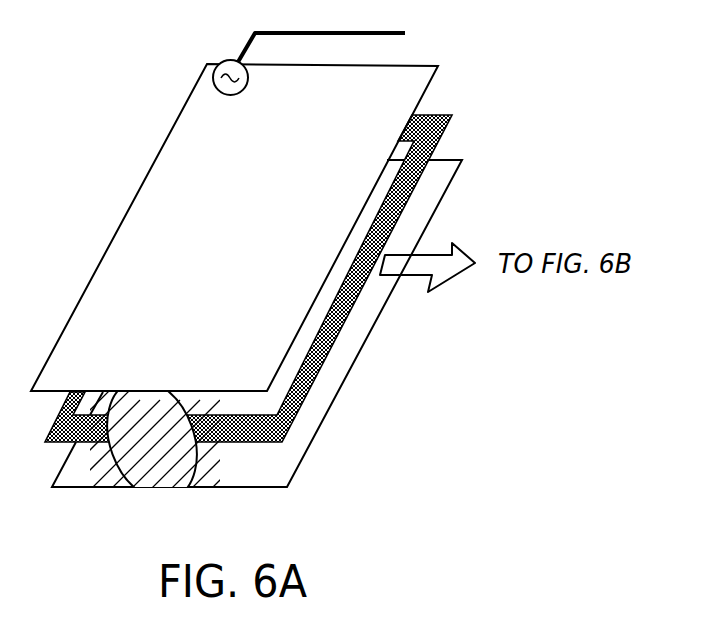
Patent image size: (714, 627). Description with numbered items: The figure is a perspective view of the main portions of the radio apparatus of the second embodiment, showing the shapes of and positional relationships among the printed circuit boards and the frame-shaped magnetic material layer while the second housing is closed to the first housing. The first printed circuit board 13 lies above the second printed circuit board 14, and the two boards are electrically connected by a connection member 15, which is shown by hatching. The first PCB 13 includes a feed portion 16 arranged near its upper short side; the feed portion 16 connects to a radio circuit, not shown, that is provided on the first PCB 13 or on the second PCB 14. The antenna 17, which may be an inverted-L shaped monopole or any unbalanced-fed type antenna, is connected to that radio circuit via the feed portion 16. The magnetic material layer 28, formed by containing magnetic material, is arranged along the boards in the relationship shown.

The first printed circuit board 13 is at (121, 222).
The second printed circuit board 14 is at (372, 328).
The connection member 15 is at (128, 463).
The feed portion 16 is at (213, 67).
The antenna 17 is at (365, 35).
The magnetic material layer 28 is at (435, 146).